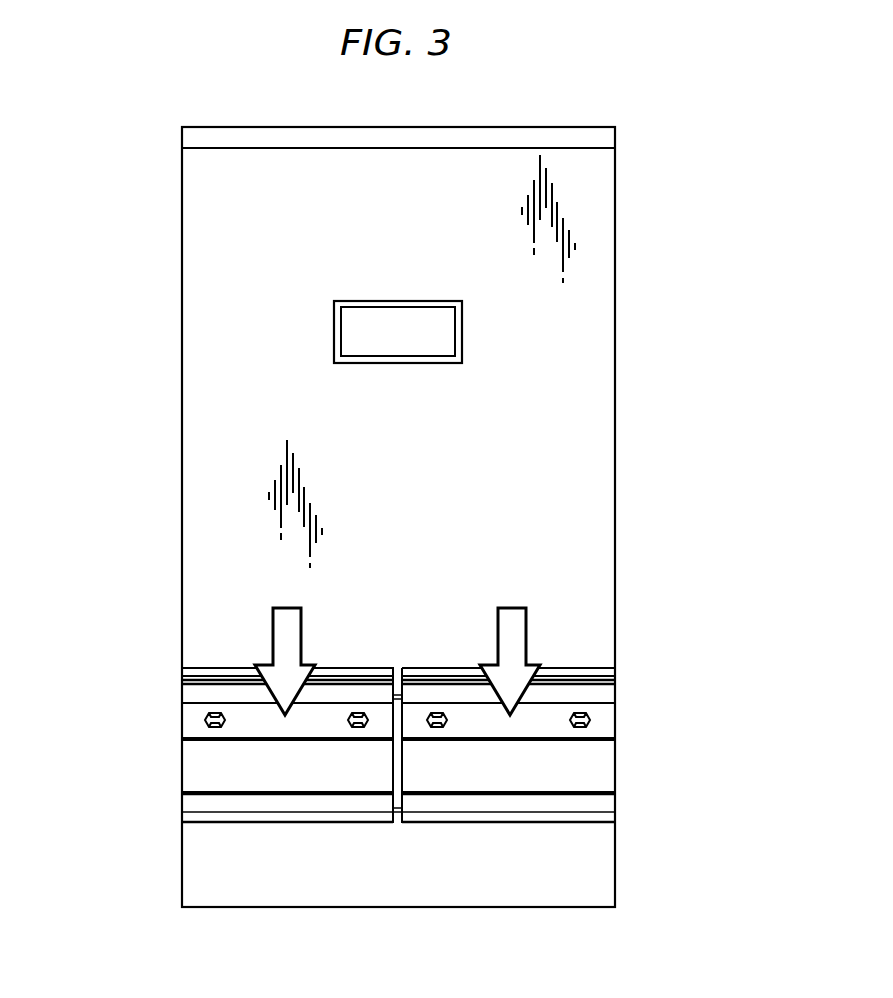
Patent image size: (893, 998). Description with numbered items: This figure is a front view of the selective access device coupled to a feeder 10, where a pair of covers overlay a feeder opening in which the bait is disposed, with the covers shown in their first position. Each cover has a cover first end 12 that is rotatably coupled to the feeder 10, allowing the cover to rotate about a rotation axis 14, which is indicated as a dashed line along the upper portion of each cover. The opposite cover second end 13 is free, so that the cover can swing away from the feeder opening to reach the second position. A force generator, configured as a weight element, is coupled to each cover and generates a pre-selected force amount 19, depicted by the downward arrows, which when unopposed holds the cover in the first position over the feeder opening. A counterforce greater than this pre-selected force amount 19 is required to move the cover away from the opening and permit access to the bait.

The feeder 10 is at (592, 485).
The rotation axis 14 is at (182, 680).
The cover first end 12 is at (205, 686).
The cover second end 13 is at (313, 812).
The pre-selected force amount 19 is at (397, 661).